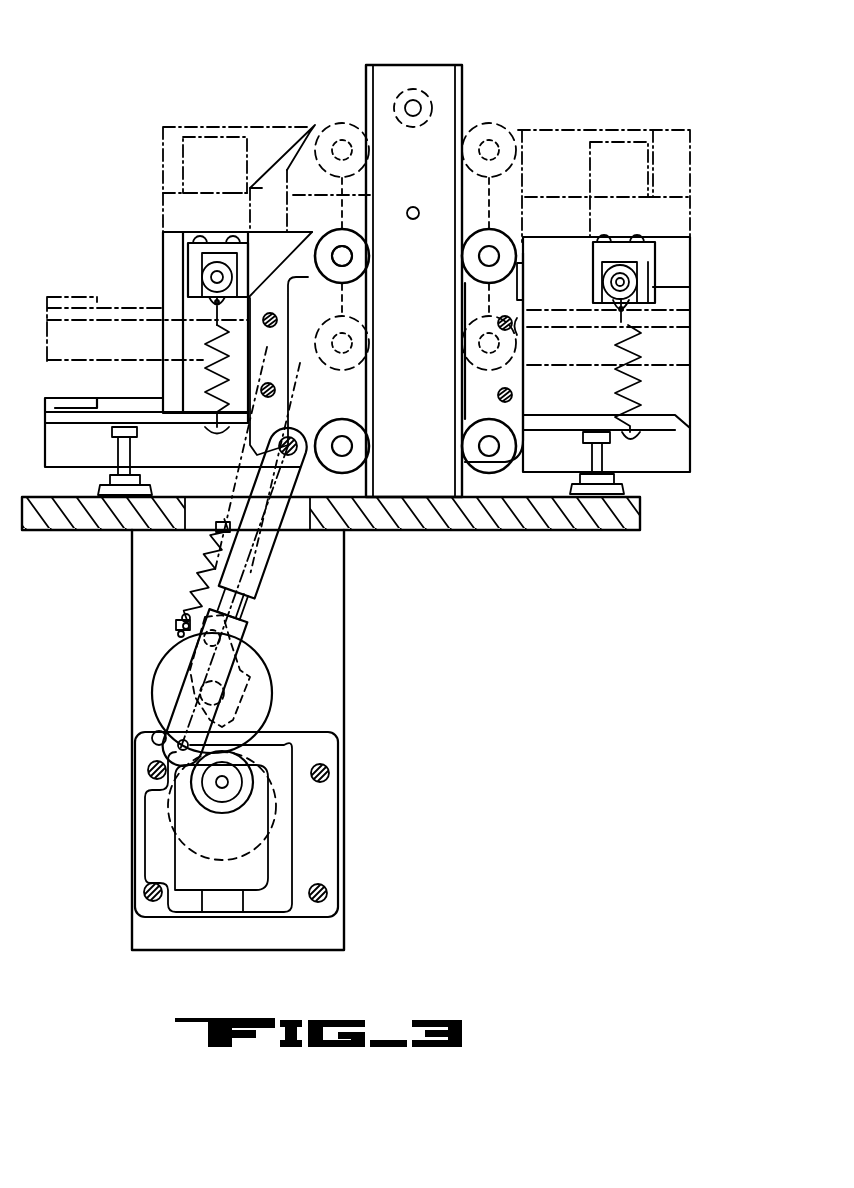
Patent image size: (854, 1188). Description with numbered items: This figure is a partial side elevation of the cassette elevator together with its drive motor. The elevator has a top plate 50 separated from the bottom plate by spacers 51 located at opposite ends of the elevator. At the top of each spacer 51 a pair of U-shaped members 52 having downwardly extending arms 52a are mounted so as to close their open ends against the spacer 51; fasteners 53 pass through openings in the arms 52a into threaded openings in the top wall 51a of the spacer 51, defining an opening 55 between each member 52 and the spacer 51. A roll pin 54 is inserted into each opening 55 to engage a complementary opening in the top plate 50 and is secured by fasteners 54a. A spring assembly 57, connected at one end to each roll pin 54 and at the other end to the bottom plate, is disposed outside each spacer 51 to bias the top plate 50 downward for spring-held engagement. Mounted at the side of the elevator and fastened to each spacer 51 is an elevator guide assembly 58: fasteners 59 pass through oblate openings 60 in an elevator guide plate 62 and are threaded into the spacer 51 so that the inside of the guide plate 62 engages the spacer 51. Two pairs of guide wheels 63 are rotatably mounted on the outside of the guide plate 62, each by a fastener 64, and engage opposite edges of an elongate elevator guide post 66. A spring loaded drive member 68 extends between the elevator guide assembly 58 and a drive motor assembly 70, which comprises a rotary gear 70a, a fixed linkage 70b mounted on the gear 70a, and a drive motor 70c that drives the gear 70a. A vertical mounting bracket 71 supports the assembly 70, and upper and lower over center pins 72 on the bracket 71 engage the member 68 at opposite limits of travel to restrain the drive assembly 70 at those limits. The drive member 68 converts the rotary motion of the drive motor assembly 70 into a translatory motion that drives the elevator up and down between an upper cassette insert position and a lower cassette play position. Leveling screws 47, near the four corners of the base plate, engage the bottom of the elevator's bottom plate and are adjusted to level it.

The leveling screws 47 is at (120, 448).
The top plate 50 is at (173, 266).
The spacers 51 is at (680, 392).
The top wall 51a is at (668, 303).
The U-shaped members 52 is at (659, 238).
The downwardly extending arms 52a is at (596, 272).
The fasteners 53 is at (637, 242).
The roll pin 54 is at (630, 285).
The fasteners 54a is at (638, 278).
The opening 55 is at (642, 268).
The spring assembly 57 is at (646, 361).
The elevator guide assembly 58 is at (530, 466).
The fasteners 59 is at (516, 333).
The oblate openings 60 is at (515, 320).
The elevator guide plate 62 is at (518, 285).
The guide wheels 63 is at (358, 241).
The fastener 64 is at (350, 260).
The elevator guide post 66 is at (440, 72).
The spring loaded drive member 68 is at (264, 566).
The drive motor assembly 70 is at (299, 677).
The rotary gear 70a is at (262, 706).
The fixed linkage 70b is at (215, 715).
The drive motor 70c is at (257, 822).
The vertical mounting bracket 71 is at (142, 585).
The over center pins 72 is at (160, 735).